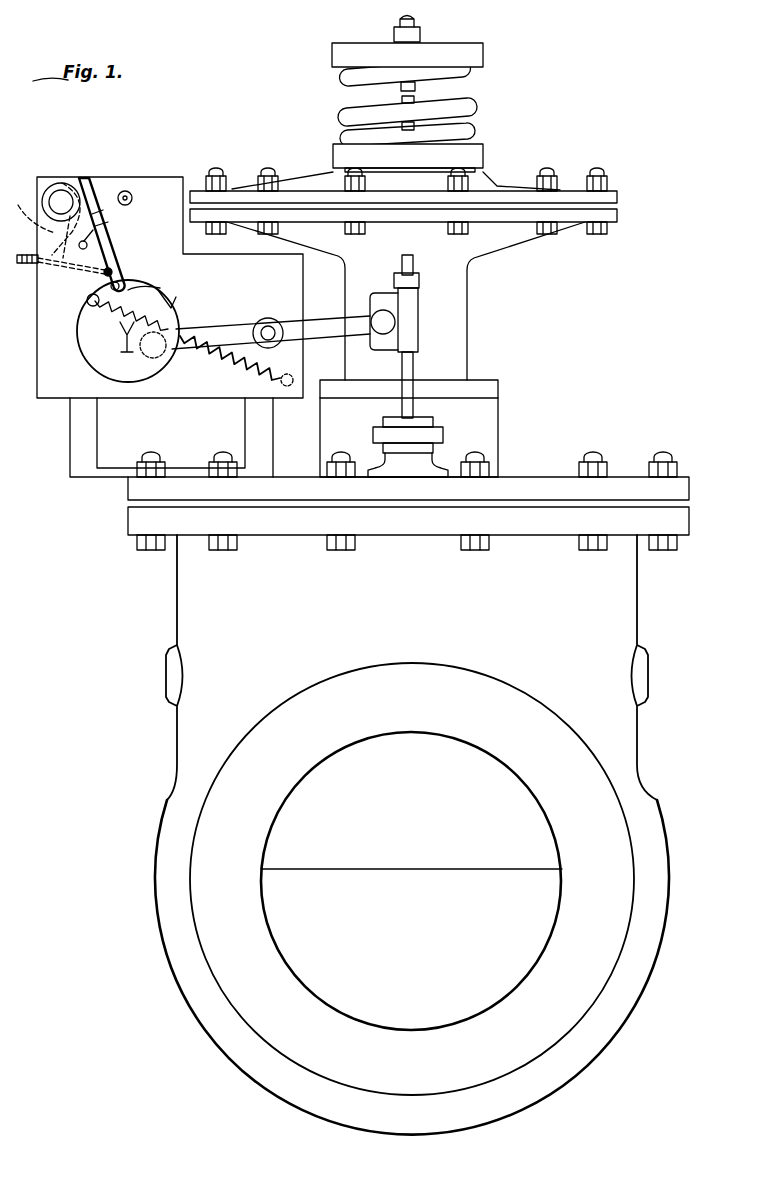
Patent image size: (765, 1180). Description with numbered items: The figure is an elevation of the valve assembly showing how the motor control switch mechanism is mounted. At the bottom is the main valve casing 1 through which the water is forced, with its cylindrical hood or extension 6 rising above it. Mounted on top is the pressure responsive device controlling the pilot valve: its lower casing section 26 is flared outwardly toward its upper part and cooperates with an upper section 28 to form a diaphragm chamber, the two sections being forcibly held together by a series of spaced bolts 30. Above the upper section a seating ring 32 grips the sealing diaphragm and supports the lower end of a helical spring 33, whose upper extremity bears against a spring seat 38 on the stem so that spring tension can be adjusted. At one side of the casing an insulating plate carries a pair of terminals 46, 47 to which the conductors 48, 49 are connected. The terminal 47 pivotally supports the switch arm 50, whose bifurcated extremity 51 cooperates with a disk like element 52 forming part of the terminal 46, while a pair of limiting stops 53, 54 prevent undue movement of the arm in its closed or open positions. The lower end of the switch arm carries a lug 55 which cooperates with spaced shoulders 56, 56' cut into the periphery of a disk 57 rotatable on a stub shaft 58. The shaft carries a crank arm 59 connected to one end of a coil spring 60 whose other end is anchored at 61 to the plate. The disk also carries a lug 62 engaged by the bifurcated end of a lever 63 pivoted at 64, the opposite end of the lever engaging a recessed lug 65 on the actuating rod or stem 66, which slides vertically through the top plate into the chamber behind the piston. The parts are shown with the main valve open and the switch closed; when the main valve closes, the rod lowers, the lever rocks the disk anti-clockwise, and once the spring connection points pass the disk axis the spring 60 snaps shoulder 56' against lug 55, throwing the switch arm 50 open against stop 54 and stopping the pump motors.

The main valve casing 1 is at (185, 758).
The cylindrical hood or extension 6 is at (178, 585).
The lower casing section 26 is at (449, 340).
The upper casing section 28 is at (572, 197).
The bolts 30 is at (606, 234).
The seating ring 32 is at (483, 152).
The helical spring 33 is at (470, 107).
The spring seat 38 is at (470, 43).
The terminal 46 is at (58, 192).
The terminal 47 is at (112, 268).
The conductor 48 is at (32, 210).
The conductor 49 is at (58, 264).
The switch arm 50 is at (108, 250).
The bifurcated extremity 51 is at (87, 178).
The disk like element 52 is at (45, 180).
The limiting stop 53 is at (88, 228).
The limiting stop 54 is at (130, 192).
The lug 55 is at (157, 283).
The shoulder 56 is at (142, 271).
The shoulder 56' is at (204, 280).
The disk 57 is at (90, 350).
The stub shaft 58 is at (125, 320).
The crank arm 59 is at (96, 305).
The coil spring 60 is at (255, 372).
The anchor 61 is at (287, 388).
The lug 62 is at (150, 356).
The lever 63 is at (241, 308).
The pivot 64 is at (268, 318).
The recessed lug 65 is at (407, 307).
The actuating rod or stem 66 is at (405, 408).